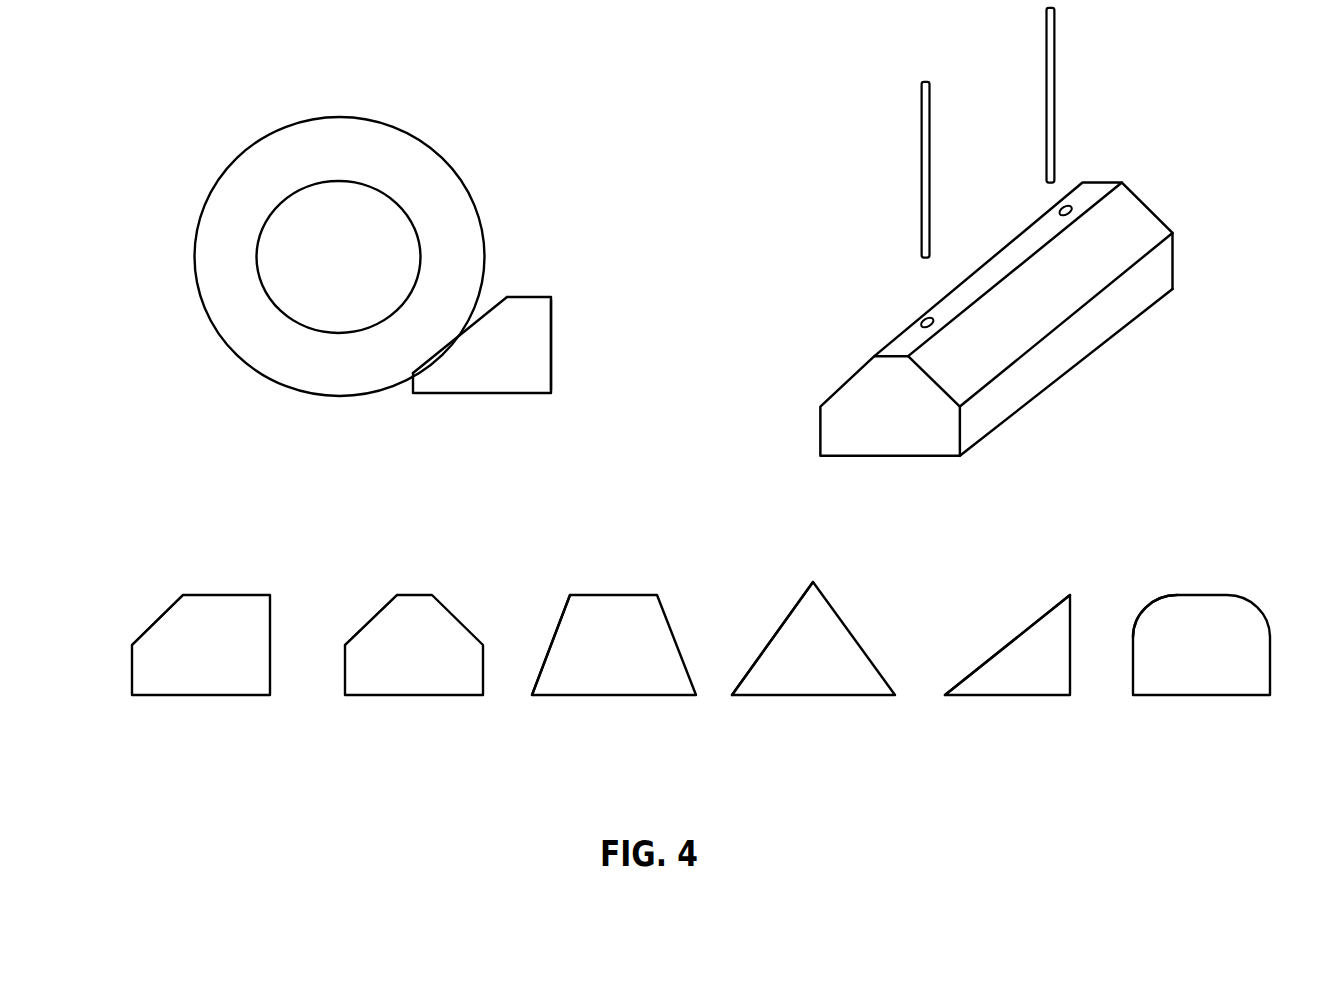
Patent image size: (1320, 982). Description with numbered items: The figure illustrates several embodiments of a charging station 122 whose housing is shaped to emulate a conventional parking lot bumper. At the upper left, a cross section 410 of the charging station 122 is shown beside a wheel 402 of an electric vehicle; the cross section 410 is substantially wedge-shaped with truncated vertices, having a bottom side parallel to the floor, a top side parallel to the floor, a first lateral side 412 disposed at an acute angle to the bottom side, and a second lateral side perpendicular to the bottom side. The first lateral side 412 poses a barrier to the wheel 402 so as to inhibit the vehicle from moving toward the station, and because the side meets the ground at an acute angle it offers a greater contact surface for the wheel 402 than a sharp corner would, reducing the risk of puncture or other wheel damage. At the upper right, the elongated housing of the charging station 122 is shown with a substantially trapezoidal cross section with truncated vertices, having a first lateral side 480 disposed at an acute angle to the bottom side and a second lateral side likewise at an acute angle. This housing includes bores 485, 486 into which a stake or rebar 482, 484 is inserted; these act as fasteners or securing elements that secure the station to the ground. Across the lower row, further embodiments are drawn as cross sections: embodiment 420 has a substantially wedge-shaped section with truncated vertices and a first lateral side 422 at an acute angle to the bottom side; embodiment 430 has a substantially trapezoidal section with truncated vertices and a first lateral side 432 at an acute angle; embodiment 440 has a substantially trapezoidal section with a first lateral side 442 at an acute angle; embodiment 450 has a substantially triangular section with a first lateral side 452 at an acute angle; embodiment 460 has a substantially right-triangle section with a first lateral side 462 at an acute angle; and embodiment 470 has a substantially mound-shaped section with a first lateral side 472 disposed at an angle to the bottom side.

The wheel 402 is at (339, 253).
The cross section 410 is at (482, 378).
The first lateral side 412 is at (471, 341).
The charging station 122 is at (862, 372).
The first lateral side 480 is at (985, 319).
The stake or rebar 482 is at (895, 155).
The stake or rebar 484 is at (1027, 93).
The bore 485 is at (898, 298).
The bore 486 is at (1023, 216).
The embodiment 420 is at (201, 683).
The first lateral side 422 is at (157, 595).
The embodiment 430 is at (414, 683).
The first lateral side 432 is at (367, 601).
The embodiment 440 is at (614, 683).
The first lateral side 442 is at (547, 625).
The embodiment 450 is at (813, 677).
The first lateral side 452 is at (772, 632).
The embodiment 460 is at (1007, 683).
The first lateral side 462 is at (1007, 632).
The embodiment 470 is at (1201, 683).
The first lateral side 472 is at (1137, 597).